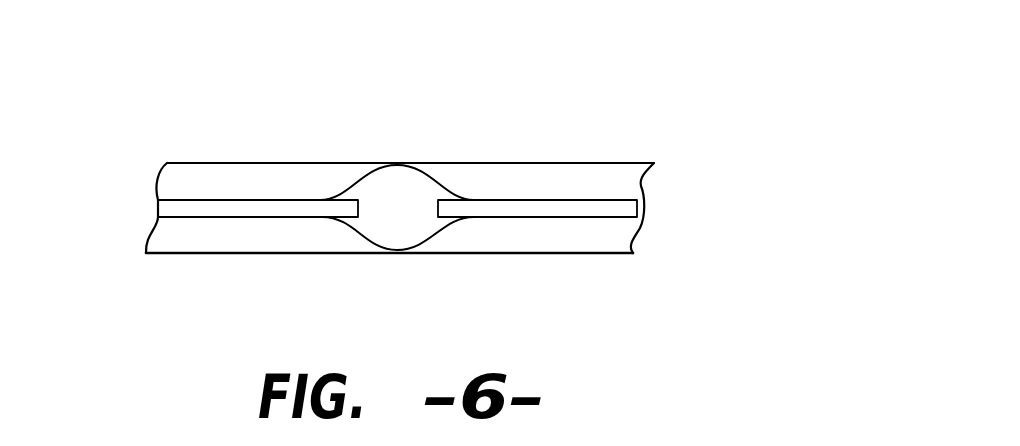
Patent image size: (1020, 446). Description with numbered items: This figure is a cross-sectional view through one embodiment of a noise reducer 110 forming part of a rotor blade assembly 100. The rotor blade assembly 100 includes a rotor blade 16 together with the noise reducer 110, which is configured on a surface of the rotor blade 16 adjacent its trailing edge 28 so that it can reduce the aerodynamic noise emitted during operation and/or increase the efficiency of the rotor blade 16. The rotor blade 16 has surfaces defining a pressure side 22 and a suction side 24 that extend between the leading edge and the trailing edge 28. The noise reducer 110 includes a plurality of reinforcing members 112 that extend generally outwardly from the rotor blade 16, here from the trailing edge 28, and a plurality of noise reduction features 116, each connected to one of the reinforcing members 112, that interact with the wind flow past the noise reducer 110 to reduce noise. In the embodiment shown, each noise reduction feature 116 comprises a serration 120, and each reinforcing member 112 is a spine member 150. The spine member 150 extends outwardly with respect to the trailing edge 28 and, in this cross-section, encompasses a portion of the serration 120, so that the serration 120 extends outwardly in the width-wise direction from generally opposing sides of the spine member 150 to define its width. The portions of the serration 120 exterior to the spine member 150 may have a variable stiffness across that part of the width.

The rotor blade assembly 100 is at (586, 94).
The noise reducer 110 is at (702, 168).
The rotor blade 16 is at (523, 146).
The suction side 24 is at (593, 162).
The pressure side 22 is at (545, 255).
The trailing edge 28 is at (634, 179).
The serration 120 is at (299, 209).
The noise reduction feature 116 is at (220, 220).
The reinforcing member 112 is at (392, 192).
The spine member 150 is at (417, 197).